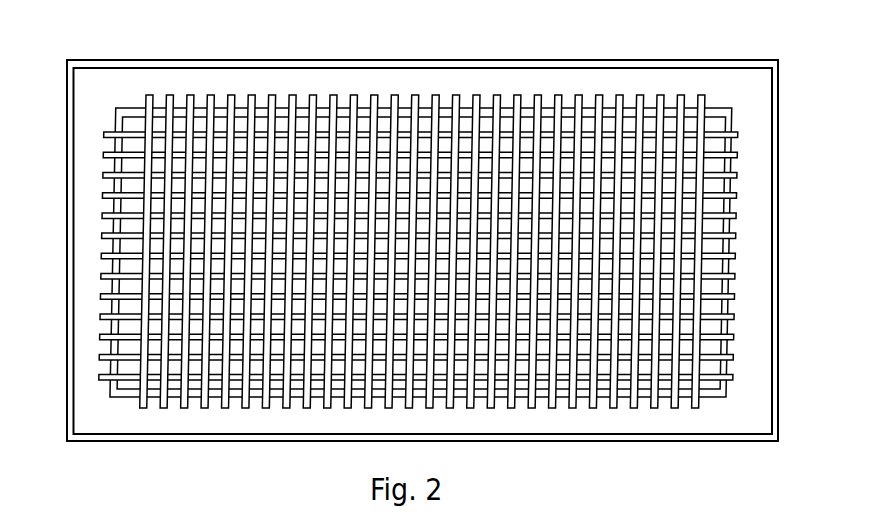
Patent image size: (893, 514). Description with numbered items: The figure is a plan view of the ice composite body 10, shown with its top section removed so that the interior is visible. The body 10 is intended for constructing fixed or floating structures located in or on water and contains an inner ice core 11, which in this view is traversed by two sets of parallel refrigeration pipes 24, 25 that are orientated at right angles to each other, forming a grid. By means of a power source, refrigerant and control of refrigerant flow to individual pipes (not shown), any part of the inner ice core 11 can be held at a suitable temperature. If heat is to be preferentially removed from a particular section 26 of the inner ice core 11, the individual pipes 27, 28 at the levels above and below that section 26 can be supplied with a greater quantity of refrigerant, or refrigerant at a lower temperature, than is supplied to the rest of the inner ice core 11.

The ice composite body 10 is at (140, 458).
The inner ice core 11 is at (253, 383).
The refrigeration pipes 24 is at (733, 378).
The refrigeration pipes 25 is at (693, 408).
The section 26 is at (636, 331).
The individual pipe 27 is at (633, 408).
The individual pipe 28 is at (735, 335).